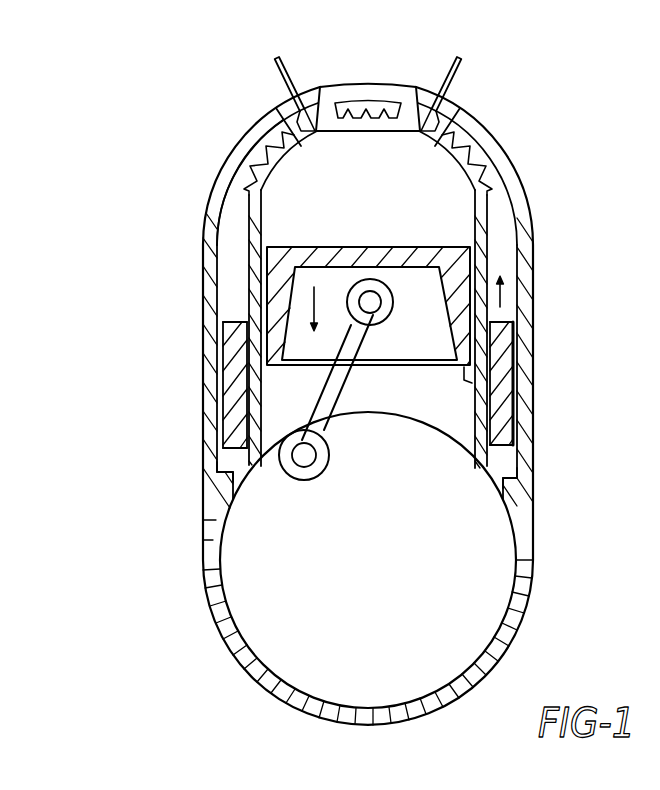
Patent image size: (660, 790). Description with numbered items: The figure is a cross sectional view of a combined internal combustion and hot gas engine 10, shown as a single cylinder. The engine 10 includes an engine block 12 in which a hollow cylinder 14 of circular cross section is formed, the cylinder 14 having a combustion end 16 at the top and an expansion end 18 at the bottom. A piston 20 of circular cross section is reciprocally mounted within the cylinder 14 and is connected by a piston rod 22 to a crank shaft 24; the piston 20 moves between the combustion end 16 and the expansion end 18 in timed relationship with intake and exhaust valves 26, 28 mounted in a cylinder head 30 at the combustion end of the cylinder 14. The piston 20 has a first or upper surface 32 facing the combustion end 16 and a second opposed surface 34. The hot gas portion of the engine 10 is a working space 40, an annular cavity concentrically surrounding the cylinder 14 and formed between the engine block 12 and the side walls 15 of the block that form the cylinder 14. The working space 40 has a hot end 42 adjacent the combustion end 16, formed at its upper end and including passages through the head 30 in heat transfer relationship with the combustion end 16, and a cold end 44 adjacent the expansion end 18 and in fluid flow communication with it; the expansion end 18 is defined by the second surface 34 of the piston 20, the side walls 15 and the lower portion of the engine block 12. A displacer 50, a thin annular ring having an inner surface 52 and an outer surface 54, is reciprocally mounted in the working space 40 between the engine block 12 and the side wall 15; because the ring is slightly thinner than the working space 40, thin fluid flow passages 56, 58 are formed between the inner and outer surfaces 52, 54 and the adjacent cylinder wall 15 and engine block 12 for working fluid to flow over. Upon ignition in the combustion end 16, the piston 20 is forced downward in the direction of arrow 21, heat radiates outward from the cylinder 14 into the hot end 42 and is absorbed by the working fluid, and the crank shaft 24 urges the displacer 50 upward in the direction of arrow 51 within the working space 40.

The combined internal combustion and hot gas engine 10 is at (130, 229).
The engine block 12 is at (205, 357).
The cylinder 14 is at (287, 400).
The side walls of the cylinder 15 is at (255, 249).
The combustion end 16 is at (443, 177).
The expansion end 18 is at (517, 428).
The piston 20 is at (472, 259).
The arrow 21 is at (315, 302).
The piston rod 22 is at (338, 392).
The crank shaft 24 is at (502, 595).
The intake valve 26 is at (455, 79).
The exhaust valve 28 is at (290, 68).
The cylinder head 30 is at (367, 86).
The first or upper surface of the piston 32 is at (438, 246).
The second opposed surface of the piston 34 is at (490, 390).
The working space 40 is at (232, 213).
The hot end of the working space 42 is at (247, 163).
The cold end of the working space 44 is at (228, 465).
The displacer 50 is at (235, 431).
The arrow 51 is at (503, 297).
The inner surface of the displacer 52 is at (485, 350).
The outer surface of the displacer 54 is at (512, 372).
The fluid flow passage 56 is at (245, 320).
The fluid flow passage 58 is at (222, 322).